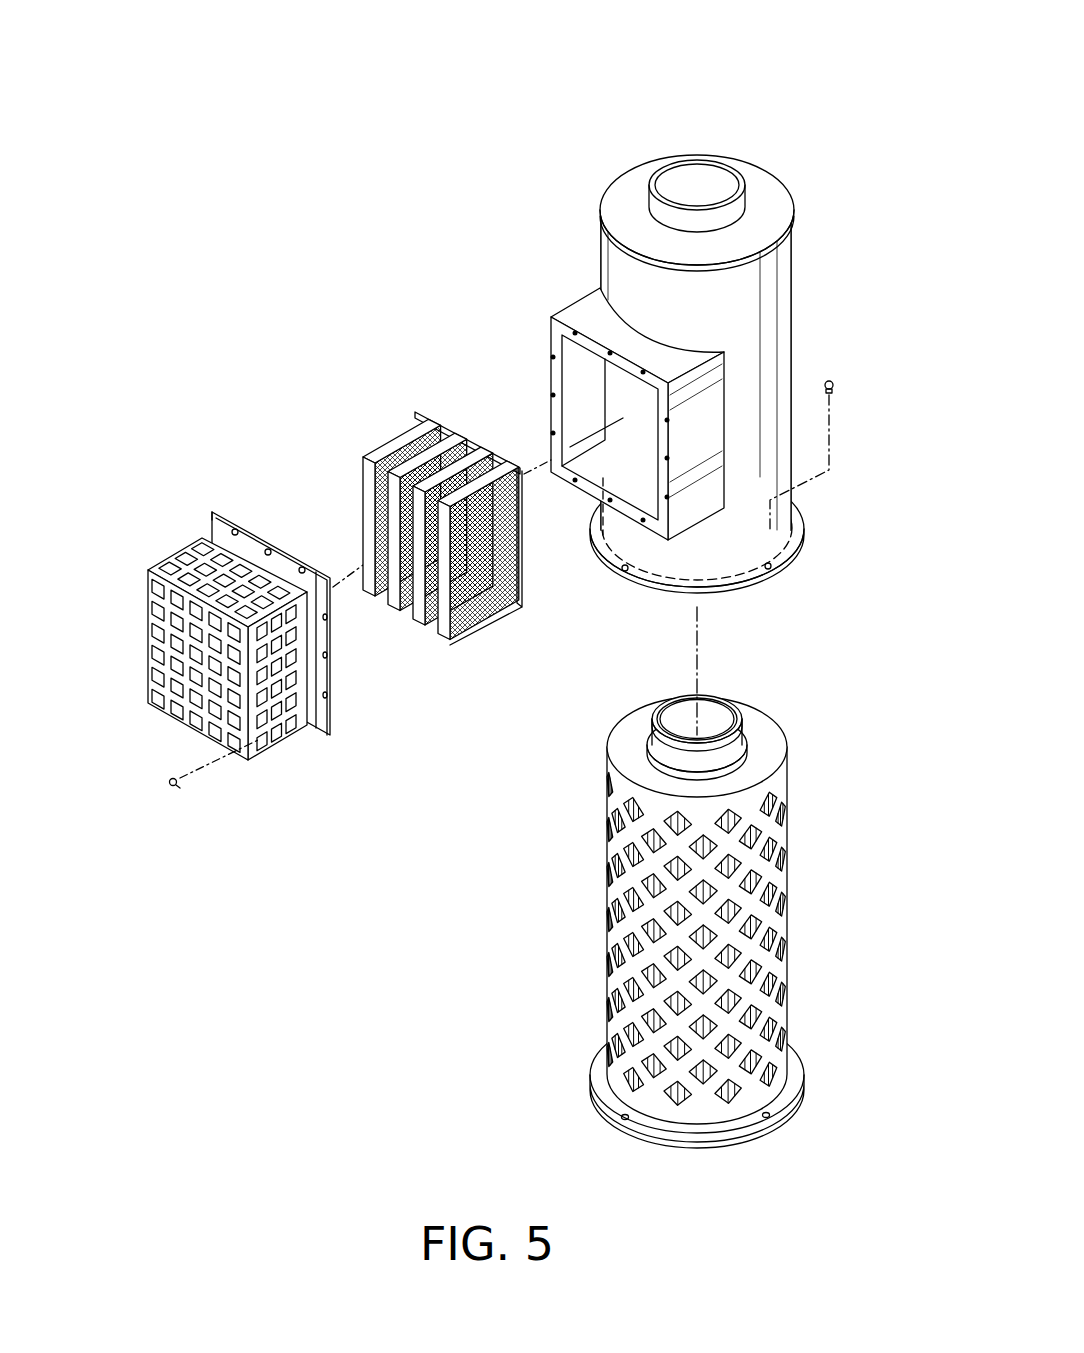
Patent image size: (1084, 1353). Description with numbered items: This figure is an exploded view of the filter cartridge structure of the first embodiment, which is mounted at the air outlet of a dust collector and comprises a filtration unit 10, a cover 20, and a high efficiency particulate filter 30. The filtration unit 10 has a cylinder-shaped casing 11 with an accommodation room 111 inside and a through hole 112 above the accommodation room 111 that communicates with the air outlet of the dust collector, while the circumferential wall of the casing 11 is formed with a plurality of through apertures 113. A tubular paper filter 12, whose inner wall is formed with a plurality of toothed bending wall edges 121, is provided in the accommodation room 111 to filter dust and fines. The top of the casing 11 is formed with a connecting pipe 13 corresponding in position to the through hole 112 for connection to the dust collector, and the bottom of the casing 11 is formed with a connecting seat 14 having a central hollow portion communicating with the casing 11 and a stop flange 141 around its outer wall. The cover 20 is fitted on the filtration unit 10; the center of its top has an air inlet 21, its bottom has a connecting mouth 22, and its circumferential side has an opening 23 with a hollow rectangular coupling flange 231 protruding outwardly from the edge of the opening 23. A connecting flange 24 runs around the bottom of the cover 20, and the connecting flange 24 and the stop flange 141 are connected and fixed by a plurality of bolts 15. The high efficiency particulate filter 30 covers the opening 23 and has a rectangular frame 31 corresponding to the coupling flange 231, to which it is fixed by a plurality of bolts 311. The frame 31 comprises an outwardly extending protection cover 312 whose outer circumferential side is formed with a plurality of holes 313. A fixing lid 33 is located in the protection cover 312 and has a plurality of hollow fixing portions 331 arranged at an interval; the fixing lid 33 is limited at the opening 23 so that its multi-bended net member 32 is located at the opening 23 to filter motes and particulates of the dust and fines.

The filtration unit 10 is at (658, 884).
The casing 11 is at (627, 910).
The accommodation room 111 is at (703, 715).
The through hole 112 is at (710, 725).
The through apertures 113 is at (607, 845).
The filter 12 is at (644, 939).
The toothed bending wall edges 121 is at (607, 938).
The connecting pipe 13 is at (653, 737).
The connecting seat 14 is at (633, 1089).
The stop flange 141 is at (613, 1117).
The bolts 15 is at (830, 378).
The cover 20 is at (676, 322).
The air inlet 21 is at (720, 177).
The connecting mouth 22 is at (790, 518).
The opening 23 is at (587, 369).
The coupling flange 231 is at (578, 313).
The connecting flange 24 is at (773, 557).
The high efficiency particulate filter 30 is at (319, 531).
The frame 31 is at (209, 585).
The bolts 311 is at (180, 785).
The protection cover 312 is at (180, 538).
The holes 313 is at (160, 665).
The net member 32 is at (472, 622).
The fixing lid 33 is at (421, 507).
The hollow fixing portions 331 is at (400, 432).